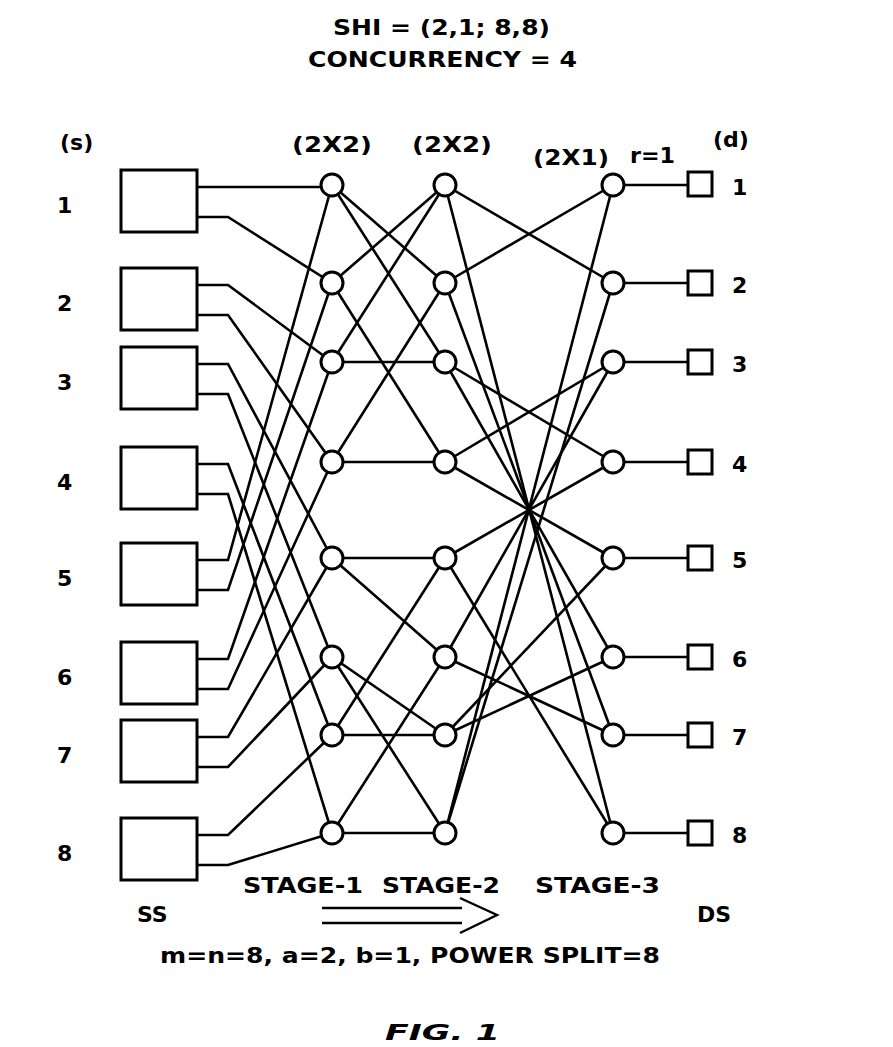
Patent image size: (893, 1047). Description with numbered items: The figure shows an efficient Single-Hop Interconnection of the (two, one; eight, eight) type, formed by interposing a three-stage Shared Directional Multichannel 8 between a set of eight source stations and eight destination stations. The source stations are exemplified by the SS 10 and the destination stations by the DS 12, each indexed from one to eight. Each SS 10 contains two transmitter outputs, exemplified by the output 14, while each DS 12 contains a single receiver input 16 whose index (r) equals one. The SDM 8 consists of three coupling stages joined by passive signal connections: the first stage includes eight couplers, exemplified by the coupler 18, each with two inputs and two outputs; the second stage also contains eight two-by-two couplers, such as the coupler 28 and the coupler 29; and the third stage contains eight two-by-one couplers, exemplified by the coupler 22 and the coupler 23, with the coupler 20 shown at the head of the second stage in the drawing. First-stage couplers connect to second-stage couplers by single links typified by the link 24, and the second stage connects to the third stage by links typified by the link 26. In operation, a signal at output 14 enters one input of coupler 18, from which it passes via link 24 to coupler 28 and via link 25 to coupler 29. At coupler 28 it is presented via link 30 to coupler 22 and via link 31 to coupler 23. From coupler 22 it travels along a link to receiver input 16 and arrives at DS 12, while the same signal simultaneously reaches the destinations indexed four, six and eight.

The shared directional multichannel 8 is at (504, 441).
The source station 10 is at (156, 170).
The destination station 12 is at (700, 197).
The transmitter output 14 is at (224, 186).
The receiver input 16 is at (652, 190).
The coupler 18 is at (343, 180).
The stage 2 switch 20 is at (456, 180).
The coupler 22 is at (613, 173).
The coupler 23 is at (624, 826).
The link 24 is at (372, 208).
The link 25 is at (407, 302).
The link 26 is at (505, 216).
The coupler 28 is at (445, 271).
The coupler 29 is at (445, 350).
The link 30 is at (506, 250).
The link 31 is at (598, 773).